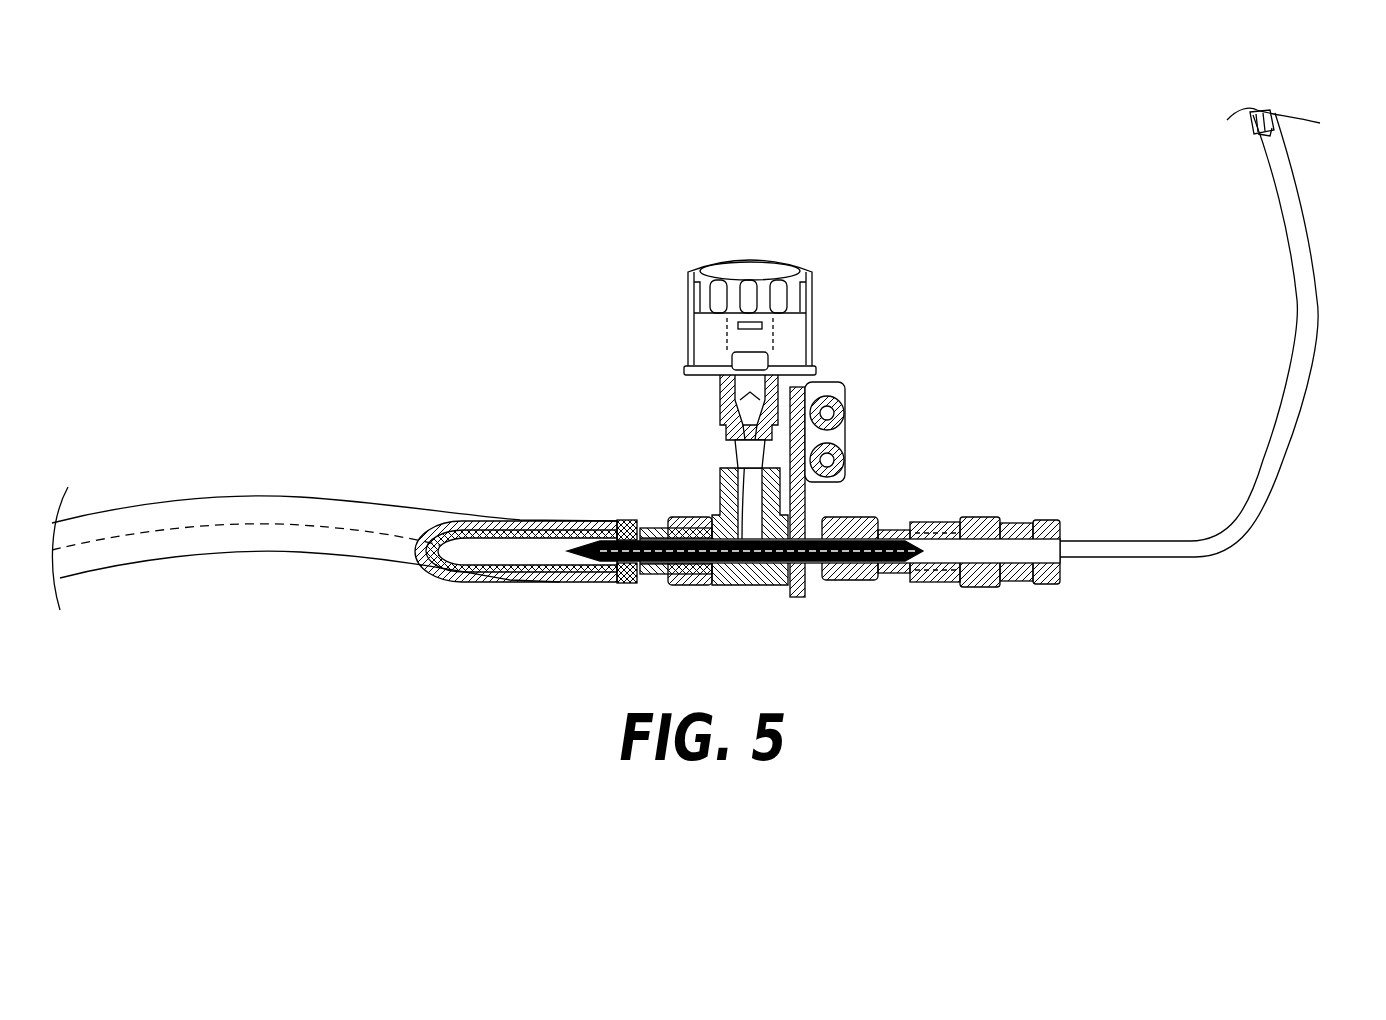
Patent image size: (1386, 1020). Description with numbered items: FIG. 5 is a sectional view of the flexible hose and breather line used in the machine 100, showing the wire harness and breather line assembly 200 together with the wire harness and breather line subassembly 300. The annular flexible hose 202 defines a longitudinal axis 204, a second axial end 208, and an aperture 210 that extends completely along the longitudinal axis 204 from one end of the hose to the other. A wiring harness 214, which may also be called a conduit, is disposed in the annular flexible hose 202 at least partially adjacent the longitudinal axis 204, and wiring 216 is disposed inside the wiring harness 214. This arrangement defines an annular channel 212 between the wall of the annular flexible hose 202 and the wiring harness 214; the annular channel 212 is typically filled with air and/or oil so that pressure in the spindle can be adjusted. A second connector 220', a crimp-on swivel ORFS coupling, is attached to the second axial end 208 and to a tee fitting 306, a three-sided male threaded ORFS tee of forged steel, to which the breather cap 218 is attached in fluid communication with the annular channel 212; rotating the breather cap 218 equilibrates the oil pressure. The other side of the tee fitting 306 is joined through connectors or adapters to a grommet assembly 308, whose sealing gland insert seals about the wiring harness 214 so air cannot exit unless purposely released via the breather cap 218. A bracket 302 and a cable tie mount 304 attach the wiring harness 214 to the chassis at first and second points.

The machine 100 is at (769, 378).
The wire harness and breather line assembly 200 is at (917, 453).
The annular flexible hose 202 is at (238, 540).
The longitudinal axis 204 is at (287, 523).
The second axial end 208 is at (515, 582).
The aperture 210 is at (592, 585).
The annular channel 212 is at (500, 578).
The wiring harness 214 is at (1118, 552).
The wiring 216 is at (757, 582).
The breather cap 218 is at (812, 331).
The second connector 220' is at (614, 502).
The wire harness and breather line subassembly 300 is at (1012, 504).
The bracket 302 is at (838, 434).
The cable tie mount 304 is at (1297, 130).
The tee fitting 306 is at (720, 498).
The grommet assembly 308 is at (1047, 508).